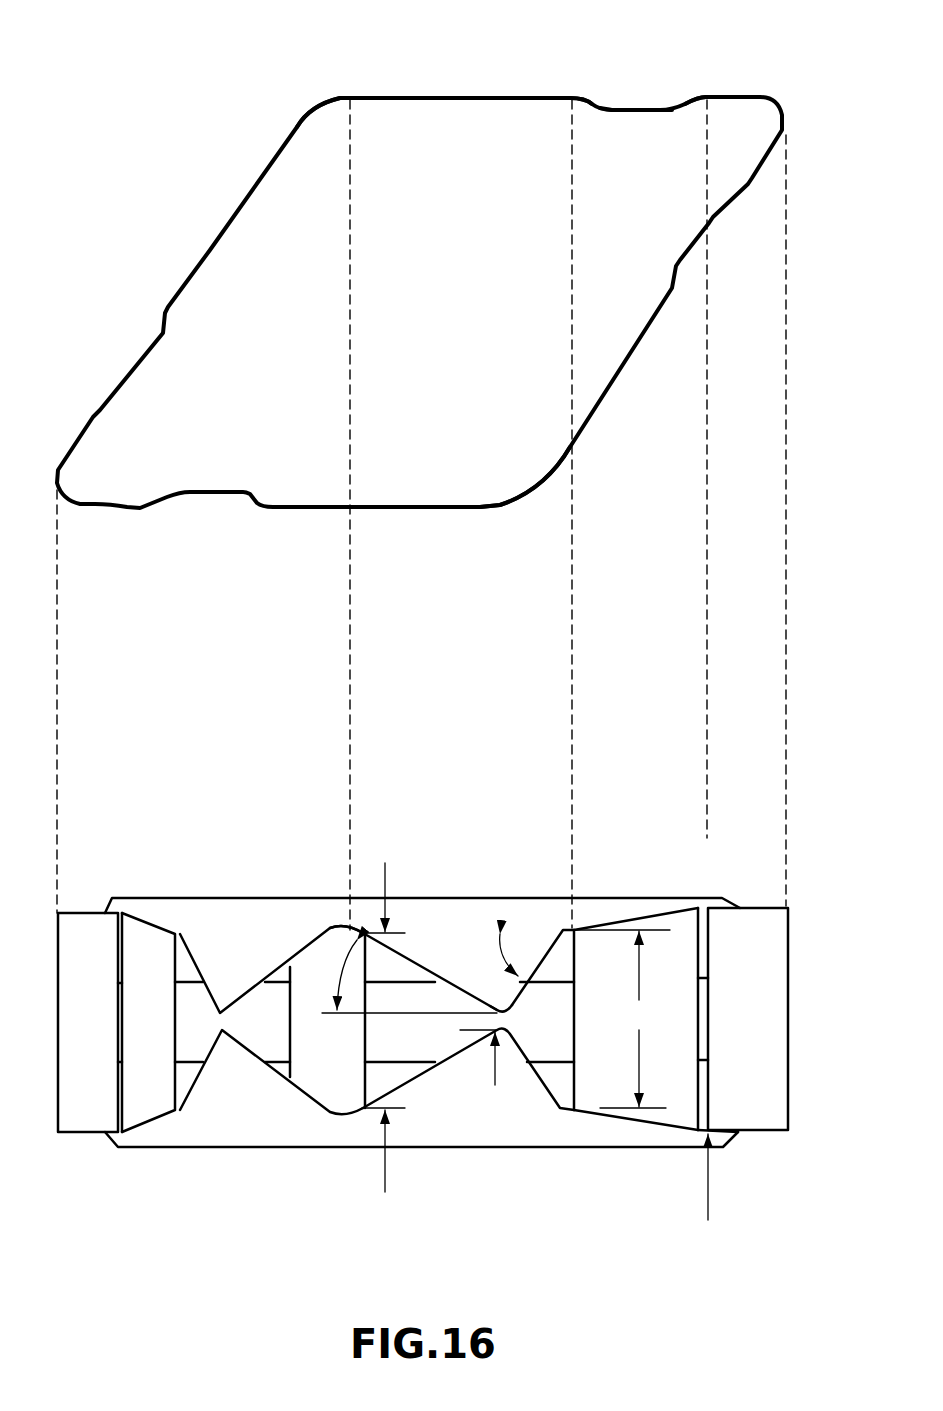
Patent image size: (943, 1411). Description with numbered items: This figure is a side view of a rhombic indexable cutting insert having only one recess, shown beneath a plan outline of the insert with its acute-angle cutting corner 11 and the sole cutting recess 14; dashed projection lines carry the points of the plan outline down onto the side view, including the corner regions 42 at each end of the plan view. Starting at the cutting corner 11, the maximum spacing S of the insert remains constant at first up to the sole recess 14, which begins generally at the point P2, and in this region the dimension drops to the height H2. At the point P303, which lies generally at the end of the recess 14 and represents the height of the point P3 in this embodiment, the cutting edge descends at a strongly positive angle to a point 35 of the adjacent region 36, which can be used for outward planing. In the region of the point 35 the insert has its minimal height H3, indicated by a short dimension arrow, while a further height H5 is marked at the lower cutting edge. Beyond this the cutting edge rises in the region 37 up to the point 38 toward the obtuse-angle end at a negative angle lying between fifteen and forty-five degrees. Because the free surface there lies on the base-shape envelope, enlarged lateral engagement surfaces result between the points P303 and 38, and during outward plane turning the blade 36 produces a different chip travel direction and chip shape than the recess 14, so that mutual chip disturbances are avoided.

The cutting corner 11 is at (782, 112).
The cutting recess 14 is at (632, 108).
The corner 42 is at (345, 94).
The point P3 is at (567, 94).
The point P2 is at (706, 94).
The point 38 is at (360, 933).
The cutting-edge region 37 is at (405, 957).
The point 35 is at (492, 1003).
The adjacent region (blade) 36 is at (540, 967).
The point P303 is at (574, 930).
The height H2 is at (643, 1023).
The minimal height H3 is at (481, 1078).
The height H5 is at (387, 1173).
The maximum spacing S is at (717, 1200).